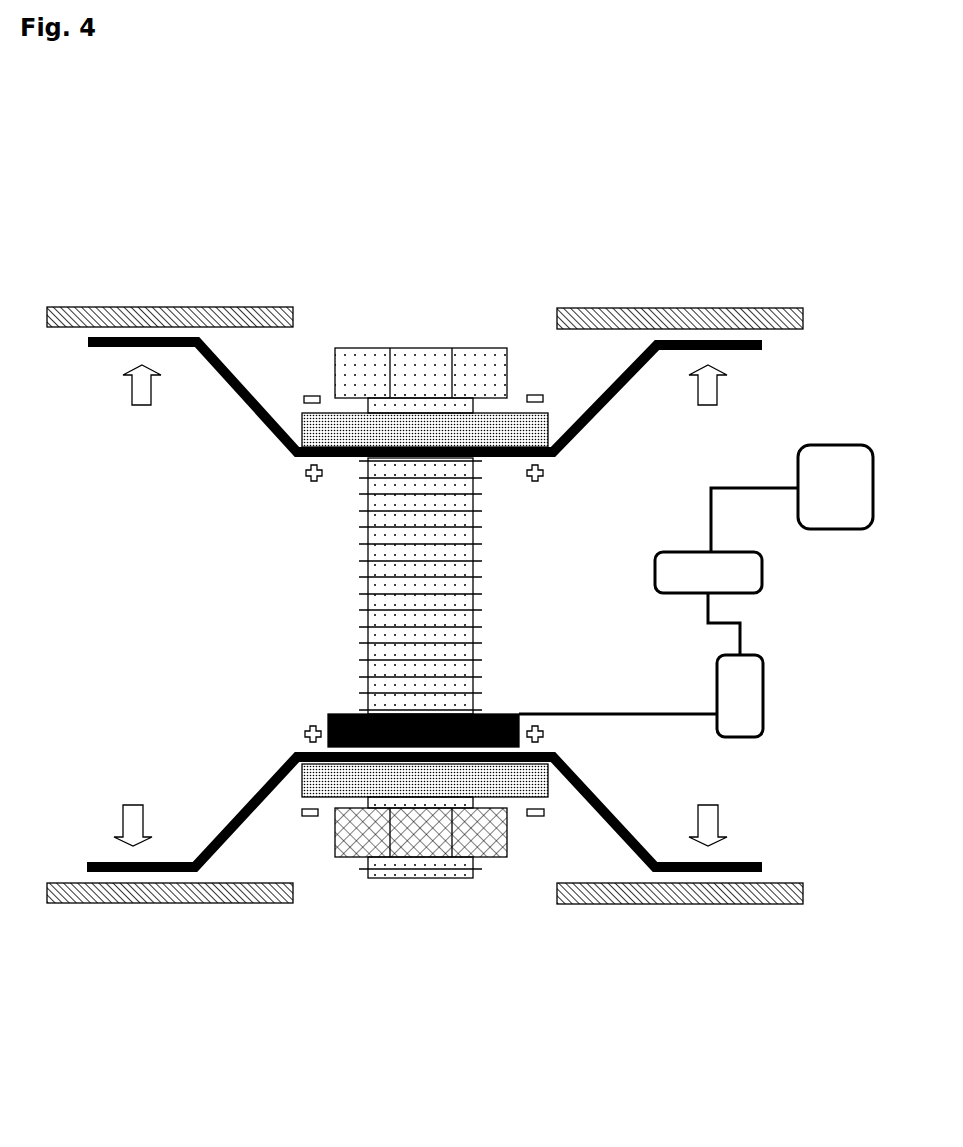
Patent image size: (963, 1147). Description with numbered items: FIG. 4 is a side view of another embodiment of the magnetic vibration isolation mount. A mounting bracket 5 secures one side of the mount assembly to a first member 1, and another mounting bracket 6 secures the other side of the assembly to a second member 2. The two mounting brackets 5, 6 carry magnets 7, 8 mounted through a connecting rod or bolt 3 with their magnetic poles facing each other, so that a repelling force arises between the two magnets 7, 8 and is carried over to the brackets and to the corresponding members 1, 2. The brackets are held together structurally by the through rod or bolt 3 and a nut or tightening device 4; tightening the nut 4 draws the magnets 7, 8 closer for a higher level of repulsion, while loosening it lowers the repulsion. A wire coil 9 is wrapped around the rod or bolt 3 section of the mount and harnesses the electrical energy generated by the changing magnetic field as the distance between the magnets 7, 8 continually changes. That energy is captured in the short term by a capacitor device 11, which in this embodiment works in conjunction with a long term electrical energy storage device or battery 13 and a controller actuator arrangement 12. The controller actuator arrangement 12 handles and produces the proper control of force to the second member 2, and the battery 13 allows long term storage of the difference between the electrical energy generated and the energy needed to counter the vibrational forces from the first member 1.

The first member 1 is at (170, 307).
The second member 2 is at (170, 903).
The connecting rod or bolt 3 is at (423, 348).
The nut or tightening device 4 is at (335, 833).
The mounting bracket 5 is at (607, 402).
The mounting bracket 6 is at (595, 815).
The magnet 7 is at (302, 432).
The magnet 8 is at (300, 776).
The wire coil 9 is at (425, 713).
The capacitor device 11 is at (737, 737).
The controller actuator arrangement 12 is at (762, 572).
The battery 13 is at (837, 529).